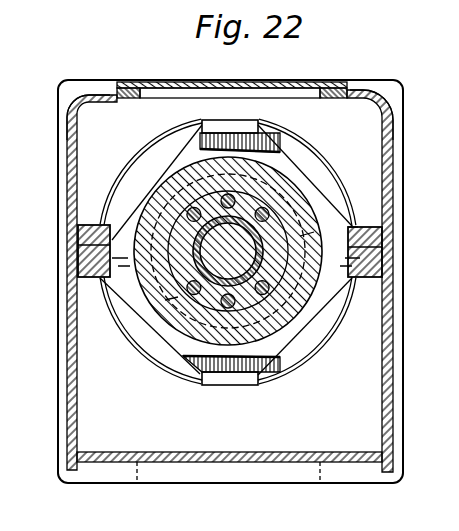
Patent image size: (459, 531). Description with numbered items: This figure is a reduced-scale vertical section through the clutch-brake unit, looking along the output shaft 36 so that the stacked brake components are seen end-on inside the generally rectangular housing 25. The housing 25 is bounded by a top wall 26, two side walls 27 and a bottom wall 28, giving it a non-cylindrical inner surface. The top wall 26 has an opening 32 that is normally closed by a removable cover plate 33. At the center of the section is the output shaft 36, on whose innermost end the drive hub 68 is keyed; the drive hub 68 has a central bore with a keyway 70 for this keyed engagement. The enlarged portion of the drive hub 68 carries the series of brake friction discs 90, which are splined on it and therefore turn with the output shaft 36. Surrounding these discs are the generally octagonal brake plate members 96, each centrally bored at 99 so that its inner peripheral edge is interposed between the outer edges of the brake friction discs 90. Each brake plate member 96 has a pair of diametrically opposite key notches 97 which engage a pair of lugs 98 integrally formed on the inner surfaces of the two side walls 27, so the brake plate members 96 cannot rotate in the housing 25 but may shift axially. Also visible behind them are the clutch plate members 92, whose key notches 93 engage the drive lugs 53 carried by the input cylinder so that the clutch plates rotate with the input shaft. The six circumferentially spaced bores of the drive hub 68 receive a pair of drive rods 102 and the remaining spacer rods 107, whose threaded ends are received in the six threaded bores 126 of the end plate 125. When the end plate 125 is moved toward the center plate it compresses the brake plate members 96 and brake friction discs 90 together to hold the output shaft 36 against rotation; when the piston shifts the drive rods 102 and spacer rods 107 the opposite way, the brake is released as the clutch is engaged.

The housing 25 is at (406, 226).
The top wall 26 is at (362, 90).
The side walls 27 is at (395, 297).
The bottom wall 28 is at (192, 462).
The opening 32 is at (143, 100).
The cover plate 33 is at (155, 82).
The output shaft 36 is at (140, 216).
The drive lugs 53 is at (233, 120).
The drive hub 68 is at (122, 322).
The keyway 70 is at (135, 337).
The brake friction discs 90 is at (322, 207).
The clutch plate members 92 is at (260, 128).
The key notches 93 is at (205, 120).
The brake plate members 96 is at (290, 343).
The key notches 97 is at (84, 236).
The lugs 98 is at (88, 252).
The central bore 99 is at (357, 224).
The drive rods 102 is at (306, 152).
The spacer rods 107 is at (185, 215).
The end plate 125 is at (334, 172).
The threaded bores 126 is at (222, 202).